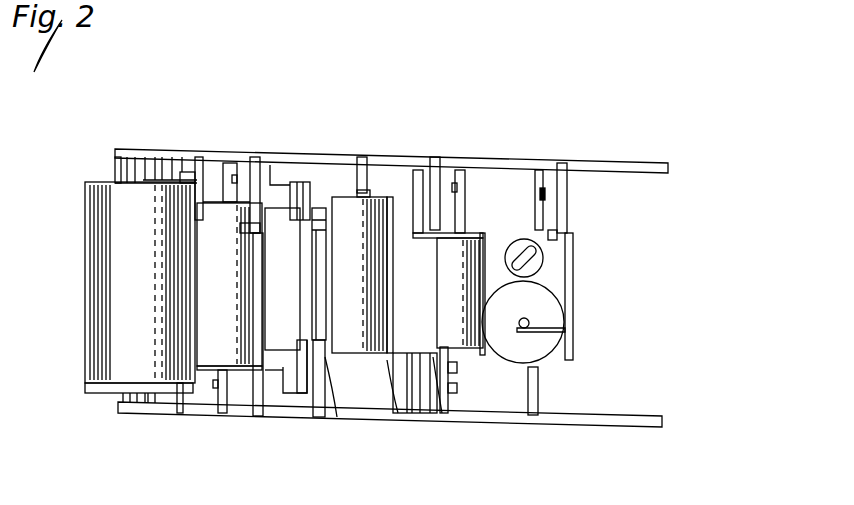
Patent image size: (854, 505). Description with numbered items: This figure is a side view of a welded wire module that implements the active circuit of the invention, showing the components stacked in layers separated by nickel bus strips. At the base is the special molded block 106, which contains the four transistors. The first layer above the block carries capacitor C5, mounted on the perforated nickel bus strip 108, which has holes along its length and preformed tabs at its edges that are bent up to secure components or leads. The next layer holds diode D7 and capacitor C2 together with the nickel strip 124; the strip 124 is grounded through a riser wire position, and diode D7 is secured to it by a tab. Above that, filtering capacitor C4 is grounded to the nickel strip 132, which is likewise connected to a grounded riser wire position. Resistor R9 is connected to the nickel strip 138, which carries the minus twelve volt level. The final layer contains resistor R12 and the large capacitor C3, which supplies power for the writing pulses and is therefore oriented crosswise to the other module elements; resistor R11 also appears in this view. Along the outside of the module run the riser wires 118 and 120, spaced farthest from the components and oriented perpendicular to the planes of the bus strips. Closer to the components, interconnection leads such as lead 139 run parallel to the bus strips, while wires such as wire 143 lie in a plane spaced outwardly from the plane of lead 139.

The molded block 106 is at (108, 197).
The capacitor C5 is at (212, 222).
The perforated nickel bus strip 108 is at (260, 380).
The capacitor C2 is at (278, 217).
The diode D7 is at (300, 266).
The nickel strip 124 is at (331, 385).
The filtering capacitor C4 is at (365, 232).
The nickel strip 132 is at (393, 400).
The nickel strip 138 is at (442, 380).
The resistor R9 is at (432, 262).
The resistor R11 is at (462, 285).
The interconnection lead 139 is at (457, 367).
The wire 143 is at (457, 389).
The resistor R12 is at (545, 263).
The capacitor C3 is at (552, 362).
The riser wires 118 is at (648, 161).
The riser wires 120 is at (603, 426).